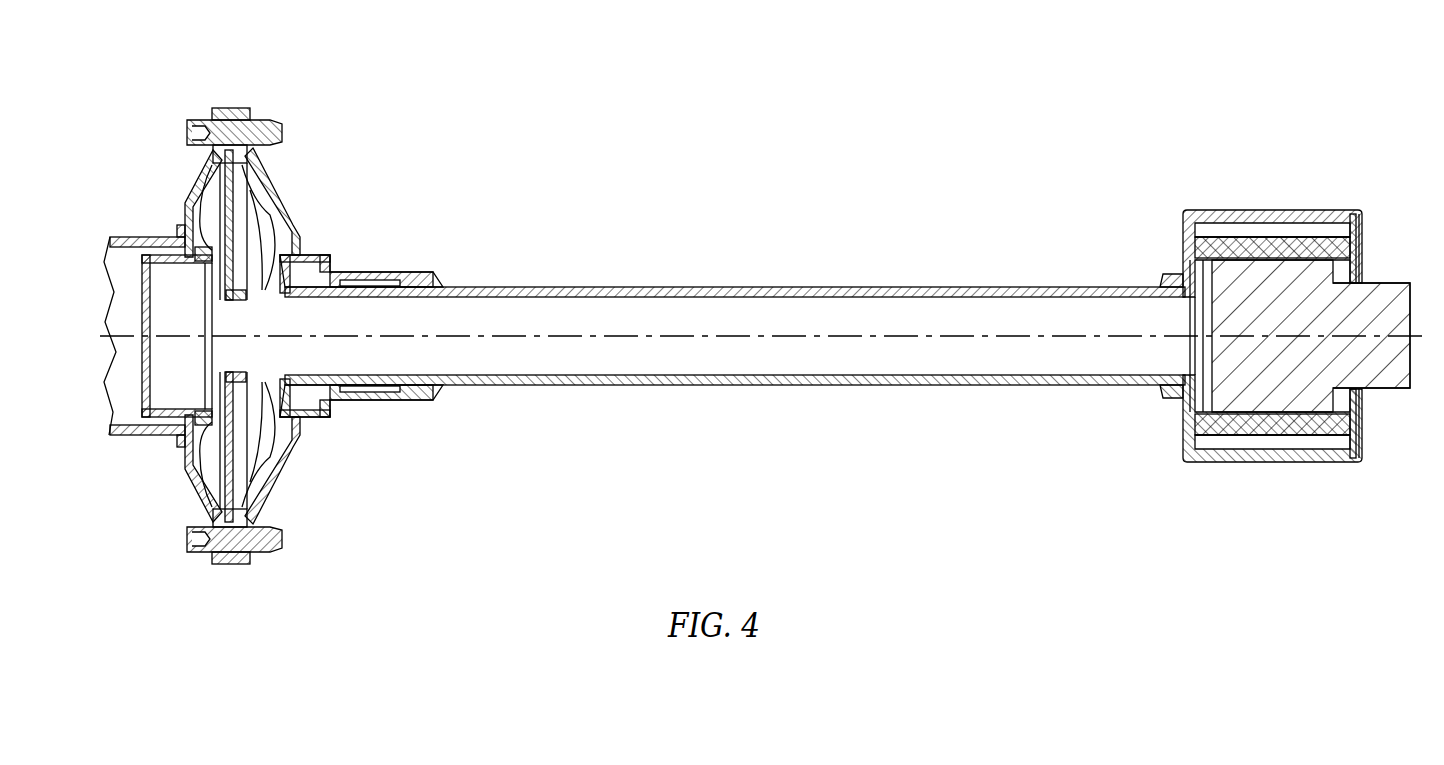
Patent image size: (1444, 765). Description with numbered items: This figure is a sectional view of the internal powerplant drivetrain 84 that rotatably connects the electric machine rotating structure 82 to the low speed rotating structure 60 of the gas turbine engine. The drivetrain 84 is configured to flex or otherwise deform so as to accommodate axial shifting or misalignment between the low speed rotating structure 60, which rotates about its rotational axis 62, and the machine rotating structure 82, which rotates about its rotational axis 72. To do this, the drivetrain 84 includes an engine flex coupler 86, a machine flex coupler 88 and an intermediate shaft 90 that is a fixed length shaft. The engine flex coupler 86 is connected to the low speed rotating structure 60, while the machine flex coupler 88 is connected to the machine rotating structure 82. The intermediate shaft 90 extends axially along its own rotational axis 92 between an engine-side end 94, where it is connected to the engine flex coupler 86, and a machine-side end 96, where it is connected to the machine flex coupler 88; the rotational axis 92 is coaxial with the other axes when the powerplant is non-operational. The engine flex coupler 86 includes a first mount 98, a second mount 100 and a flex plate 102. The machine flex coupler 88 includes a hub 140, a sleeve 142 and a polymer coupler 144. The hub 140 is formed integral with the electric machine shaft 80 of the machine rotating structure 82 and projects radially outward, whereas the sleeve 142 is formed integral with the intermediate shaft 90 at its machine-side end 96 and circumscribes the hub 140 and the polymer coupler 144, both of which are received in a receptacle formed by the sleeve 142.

The low speed rotating structure 60 is at (103, 232).
The rotational axis 62 is at (762, 394).
The rotational axis 72 is at (762, 394).
The rotational axis 92 is at (618, 338).
The electric machine shaft 80 is at (1412, 365).
The electric machine rotating structure 82 is at (1396, 272).
The internal powerplant drivetrain 84 is at (1102, 154).
The engine flex coupler 86 is at (290, 108).
The machine flex coupler 88 is at (1282, 200).
The intermediate shaft 90 is at (872, 282).
The engine-side end 94 is at (283, 398).
The machine-side end 96 is at (1365, 455).
The first mount 98 is at (197, 198).
The second mount 100 is at (267, 187).
The flex plate 102 is at (252, 290).
The hub 140 is at (1263, 425).
The sleeve 142 is at (1200, 476).
The polymer coupler 144 is at (1306, 452).